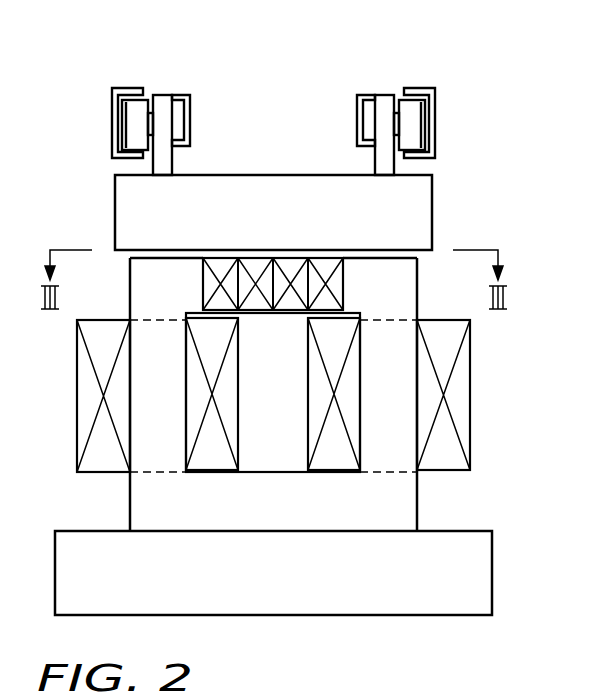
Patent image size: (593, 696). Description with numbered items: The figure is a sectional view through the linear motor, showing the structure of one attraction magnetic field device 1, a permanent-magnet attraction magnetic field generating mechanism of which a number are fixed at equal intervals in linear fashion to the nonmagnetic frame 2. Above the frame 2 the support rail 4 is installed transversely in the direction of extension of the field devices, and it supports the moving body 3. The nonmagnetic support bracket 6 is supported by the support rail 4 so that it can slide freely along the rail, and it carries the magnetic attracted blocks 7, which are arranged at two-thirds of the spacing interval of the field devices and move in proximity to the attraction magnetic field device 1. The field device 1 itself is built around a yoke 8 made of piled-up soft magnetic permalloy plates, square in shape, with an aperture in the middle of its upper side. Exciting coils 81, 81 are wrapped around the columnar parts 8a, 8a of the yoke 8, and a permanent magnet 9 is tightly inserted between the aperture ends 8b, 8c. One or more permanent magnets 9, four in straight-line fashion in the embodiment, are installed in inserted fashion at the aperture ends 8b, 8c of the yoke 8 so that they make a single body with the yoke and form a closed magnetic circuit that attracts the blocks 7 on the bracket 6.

The attraction magnetic field device 1 is at (478, 358).
The nonmagnetic frame 2 is at (480, 574).
The moving body 3 is at (316, 193).
The support rail 4 is at (108, 143).
The nonmagnetic support bracket 6 is at (172, 162).
The magnetic attracted block 7 is at (428, 200).
The yoke 8 is at (316, 358).
The columnar part 8a is at (145, 455).
The aperture end 8b is at (208, 263).
The aperture end 8c is at (338, 276).
The permanent magnet 9 is at (222, 268).
The exciting coil 81 is at (100, 393).